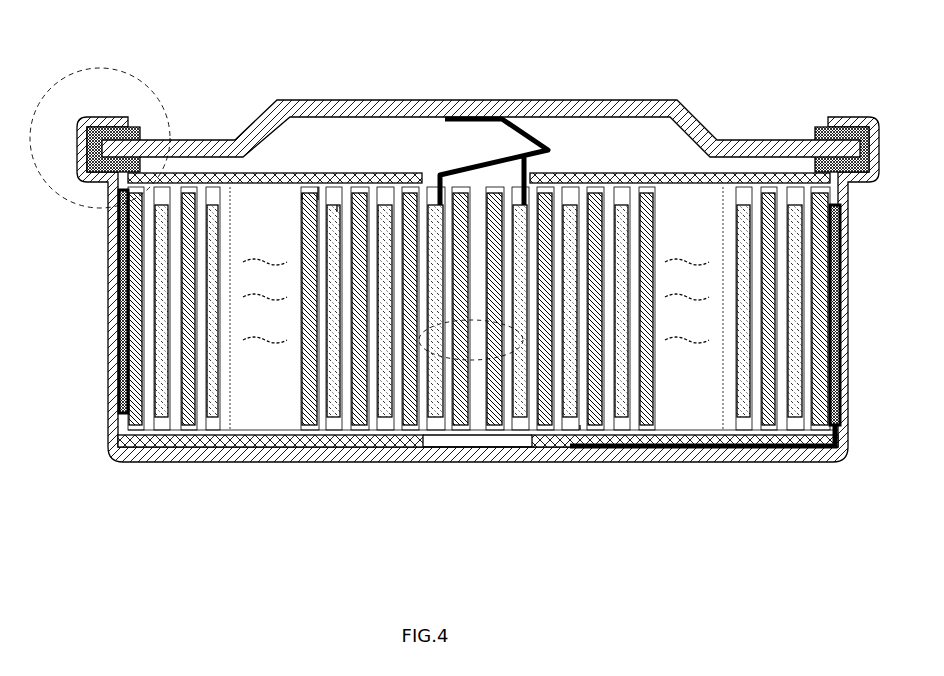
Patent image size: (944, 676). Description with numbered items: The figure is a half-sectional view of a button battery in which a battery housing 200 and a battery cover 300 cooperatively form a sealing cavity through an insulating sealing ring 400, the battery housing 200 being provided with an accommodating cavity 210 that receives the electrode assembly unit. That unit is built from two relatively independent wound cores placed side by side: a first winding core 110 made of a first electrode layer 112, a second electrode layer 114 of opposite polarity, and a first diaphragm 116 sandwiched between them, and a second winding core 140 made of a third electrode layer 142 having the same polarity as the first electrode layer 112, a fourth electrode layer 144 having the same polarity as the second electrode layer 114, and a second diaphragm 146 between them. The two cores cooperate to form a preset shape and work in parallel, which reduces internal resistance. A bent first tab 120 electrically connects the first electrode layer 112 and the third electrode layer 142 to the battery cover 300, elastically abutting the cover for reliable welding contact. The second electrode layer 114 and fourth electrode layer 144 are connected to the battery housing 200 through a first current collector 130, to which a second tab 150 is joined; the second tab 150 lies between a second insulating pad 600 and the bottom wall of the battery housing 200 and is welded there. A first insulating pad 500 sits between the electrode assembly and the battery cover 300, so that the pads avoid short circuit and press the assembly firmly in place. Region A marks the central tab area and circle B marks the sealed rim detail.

The first winding core 110 is at (491, 294).
The first electrode layer 112 is at (570, 413).
The second electrode layer 114 is at (602, 417).
The first diaphragm 116 is at (585, 425).
The first tab 120 is at (545, 157).
The first current collector 130 is at (842, 323).
The second winding core 140 is at (318, 377).
The third electrode layer 142 is at (323, 192).
The fourth electrode layer 144 is at (302, 197).
The second diaphragm 146 is at (337, 212).
The second tab 150 is at (805, 448).
The battery housing 200 is at (117, 360).
The accommodating cavity 210 is at (232, 417).
The battery cover 300 is at (643, 102).
The sealing ring 400 is at (840, 130).
The first insulating pad 500 is at (715, 178).
The second insulating pad 600 is at (287, 442).
The region A is at (482, 362).
The detail region B is at (100, 213).